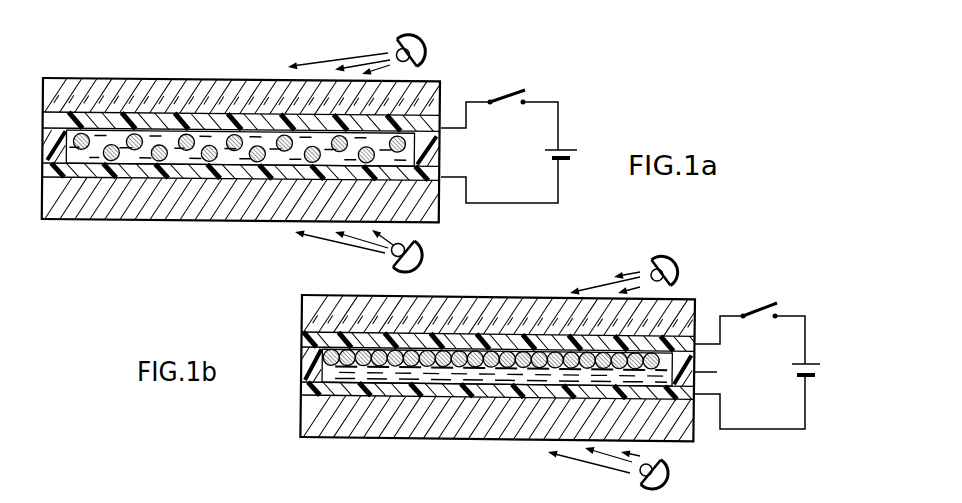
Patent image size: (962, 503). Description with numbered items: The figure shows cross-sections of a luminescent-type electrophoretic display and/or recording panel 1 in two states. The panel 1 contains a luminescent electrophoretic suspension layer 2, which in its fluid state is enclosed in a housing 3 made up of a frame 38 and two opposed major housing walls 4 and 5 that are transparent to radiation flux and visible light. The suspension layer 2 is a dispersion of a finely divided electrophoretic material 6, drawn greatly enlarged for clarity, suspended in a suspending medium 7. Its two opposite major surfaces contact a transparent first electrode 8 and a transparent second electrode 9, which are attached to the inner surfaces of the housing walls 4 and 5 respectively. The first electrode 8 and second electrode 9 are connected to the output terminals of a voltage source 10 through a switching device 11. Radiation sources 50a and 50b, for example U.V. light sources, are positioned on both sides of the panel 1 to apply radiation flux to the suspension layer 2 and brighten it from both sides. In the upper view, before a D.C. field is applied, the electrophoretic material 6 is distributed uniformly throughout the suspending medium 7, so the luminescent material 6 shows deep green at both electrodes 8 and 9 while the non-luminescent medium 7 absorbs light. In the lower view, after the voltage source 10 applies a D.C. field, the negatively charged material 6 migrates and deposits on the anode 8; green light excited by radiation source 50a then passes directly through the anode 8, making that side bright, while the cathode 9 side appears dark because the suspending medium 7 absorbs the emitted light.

In FIG. 1A, the electrophoretic display and/or recording panel 1 is at (180, 66).
In FIG. 1A, the luminescent electrophoretic suspension layer 2 is at (98, 153).
In FIG. 1A, the housing 3 is at (38, 70).
In FIG. 1B, the housing 3 is at (297, 291).
In FIG. 1A, the major housing wall 4 is at (43, 88).
In FIG. 1B, the major housing wall 4 is at (313, 307).
In FIG. 1A, the major housing wall 5 is at (47, 192).
In FIG. 1B, the major housing wall 5 is at (310, 412).
In FIG. 1A, the electrophoretic material 6 is at (162, 161).
In FIG. 1A, the suspending medium 7 is at (232, 158).
In FIG. 1A, the first electrode 8 is at (43, 117).
In FIG. 1B, the first electrode 8 is at (302, 338).
In FIG. 1A, the second electrode 9 is at (45, 163).
In FIG. 1B, the second electrode 9 is at (303, 387).
In FIG. 1A, the voltage source 10 is at (577, 149).
In FIG. 1B, the voltage source 10 is at (820, 363).
In FIG. 1A, the switching device 11 is at (506, 95).
In FIG. 1B, the switching device 11 is at (760, 302).
In FIG. 1A, the frame 38 is at (44, 147).
In FIG. 1B, the frame 38 is at (303, 365).
In FIG. 1A, the radiation source 50a is at (426, 47).
In FIG. 1B, the radiation source 50a is at (678, 270).
In FIG. 1A, the radiation source 50b is at (421, 245).
In FIG. 1B, the radiation source 50b is at (668, 470).